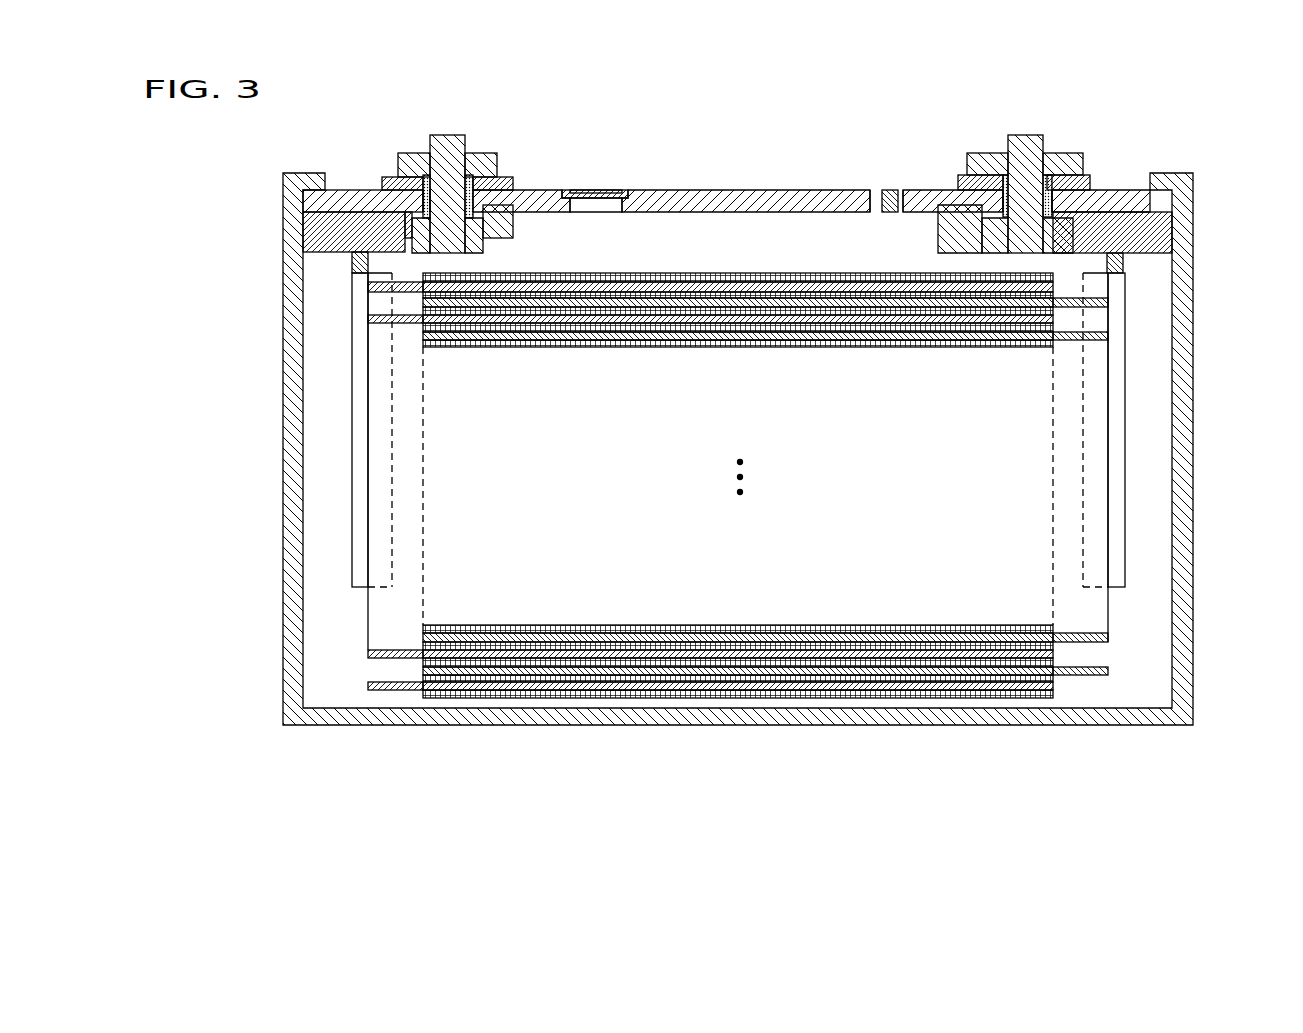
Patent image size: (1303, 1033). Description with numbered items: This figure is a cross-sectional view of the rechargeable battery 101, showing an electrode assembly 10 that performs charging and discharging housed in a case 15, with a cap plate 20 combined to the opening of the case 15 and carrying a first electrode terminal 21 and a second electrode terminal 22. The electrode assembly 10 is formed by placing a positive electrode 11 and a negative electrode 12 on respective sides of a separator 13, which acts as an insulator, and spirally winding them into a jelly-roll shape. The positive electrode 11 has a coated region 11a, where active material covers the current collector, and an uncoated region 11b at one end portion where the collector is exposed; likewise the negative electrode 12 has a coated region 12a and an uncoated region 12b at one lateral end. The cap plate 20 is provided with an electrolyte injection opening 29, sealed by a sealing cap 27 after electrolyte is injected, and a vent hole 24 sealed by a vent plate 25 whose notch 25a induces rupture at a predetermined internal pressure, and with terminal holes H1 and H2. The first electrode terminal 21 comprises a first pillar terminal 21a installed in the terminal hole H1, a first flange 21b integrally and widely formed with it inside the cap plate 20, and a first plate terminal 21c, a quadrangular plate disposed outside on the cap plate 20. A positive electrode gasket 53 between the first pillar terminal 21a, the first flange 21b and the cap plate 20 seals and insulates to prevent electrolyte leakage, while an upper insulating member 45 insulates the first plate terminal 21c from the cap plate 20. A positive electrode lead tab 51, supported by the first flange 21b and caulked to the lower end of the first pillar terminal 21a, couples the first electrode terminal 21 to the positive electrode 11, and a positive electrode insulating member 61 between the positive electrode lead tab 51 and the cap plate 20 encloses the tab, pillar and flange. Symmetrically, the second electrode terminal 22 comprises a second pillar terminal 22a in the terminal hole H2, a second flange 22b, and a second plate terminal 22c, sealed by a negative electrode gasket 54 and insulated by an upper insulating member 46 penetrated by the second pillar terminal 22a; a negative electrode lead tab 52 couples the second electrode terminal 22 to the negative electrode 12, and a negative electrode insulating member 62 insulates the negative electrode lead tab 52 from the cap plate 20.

The rechargeable battery 101 is at (733, 96).
The electrode assembly 10 is at (744, 545).
The positive electrode 11 is at (383, 780).
The coated region 11a is at (527, 684).
The uncoated region 11b is at (398, 688).
The negative electrode 12 is at (1120, 780).
The coated region 12a is at (968, 676).
The uncoated region 12b is at (1090, 676).
The separator 13 is at (752, 698).
The case 15 is at (1192, 386).
The cap plate 20 is at (655, 189).
The first electrode terminal 21 is at (444, 126).
The first pillar terminal 21a is at (450, 240).
The first flange 21b is at (482, 200).
The first plate terminal 21c is at (478, 152).
The second electrode terminal 22 is at (1025, 126).
The second pillar terminal 22a is at (1042, 253).
The second flange 22b is at (988, 228).
The second plate terminal 22c is at (1068, 153).
The vent hole 24 is at (596, 213).
The vent plate 25 is at (616, 190).
The notch 25a is at (583, 190).
The sealing cap 27 is at (893, 190).
The electrolyte injection opening 29 is at (876, 190).
The upper insulating member 45 is at (392, 177).
The upper insulating member 46 is at (1090, 177).
The positive electrode lead tab 51 is at (340, 393).
The negative electrode lead tab 52 is at (1140, 548).
The positive electrode gasket 53 is at (428, 204).
The negative electrode gasket 54 is at (988, 153).
The positive electrode insulating member 61 is at (325, 228).
The negative electrode insulating member 62 is at (1160, 232).
The terminal hole H1 is at (432, 173).
The terminal hole H2 is at (1036, 195).